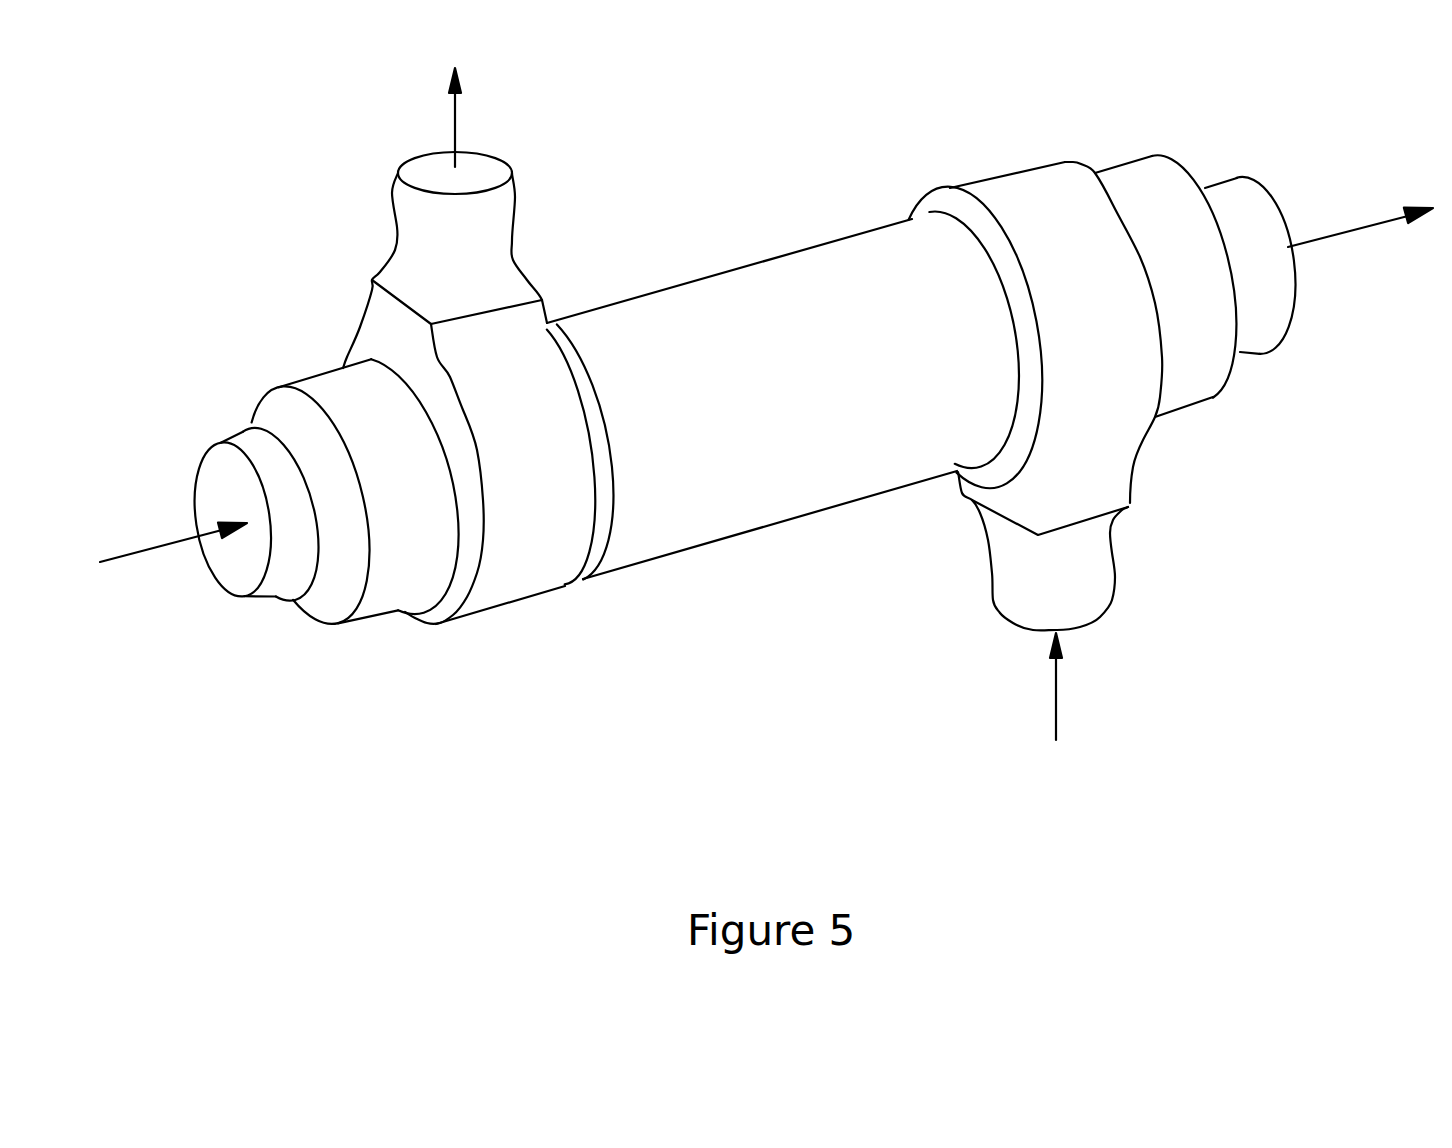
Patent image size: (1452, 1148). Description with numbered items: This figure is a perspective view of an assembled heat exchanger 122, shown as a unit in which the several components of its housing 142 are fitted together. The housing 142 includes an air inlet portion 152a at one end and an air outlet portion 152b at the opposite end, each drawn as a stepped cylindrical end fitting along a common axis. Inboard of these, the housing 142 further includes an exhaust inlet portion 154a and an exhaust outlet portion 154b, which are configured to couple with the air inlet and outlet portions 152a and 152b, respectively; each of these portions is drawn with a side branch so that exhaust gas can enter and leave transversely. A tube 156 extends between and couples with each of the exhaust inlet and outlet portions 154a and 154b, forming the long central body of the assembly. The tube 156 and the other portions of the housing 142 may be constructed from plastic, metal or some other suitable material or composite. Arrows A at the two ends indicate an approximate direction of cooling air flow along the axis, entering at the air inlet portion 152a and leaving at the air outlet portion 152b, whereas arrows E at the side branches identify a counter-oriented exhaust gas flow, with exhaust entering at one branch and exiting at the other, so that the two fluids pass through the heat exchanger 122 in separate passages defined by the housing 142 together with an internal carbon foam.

The heat exchanger 122 is at (766, 408).
The housing 142 is at (503, 272).
The air inlet portion 152a is at (368, 608).
The air outlet portion 152b is at (1215, 370).
The exhaust inlet portion 154a is at (537, 587).
The exhaust outlet portion 154b is at (1127, 482).
The tube 156 is at (832, 493).
The arrows A is at (140, 553).
The arrows E is at (455, 125).